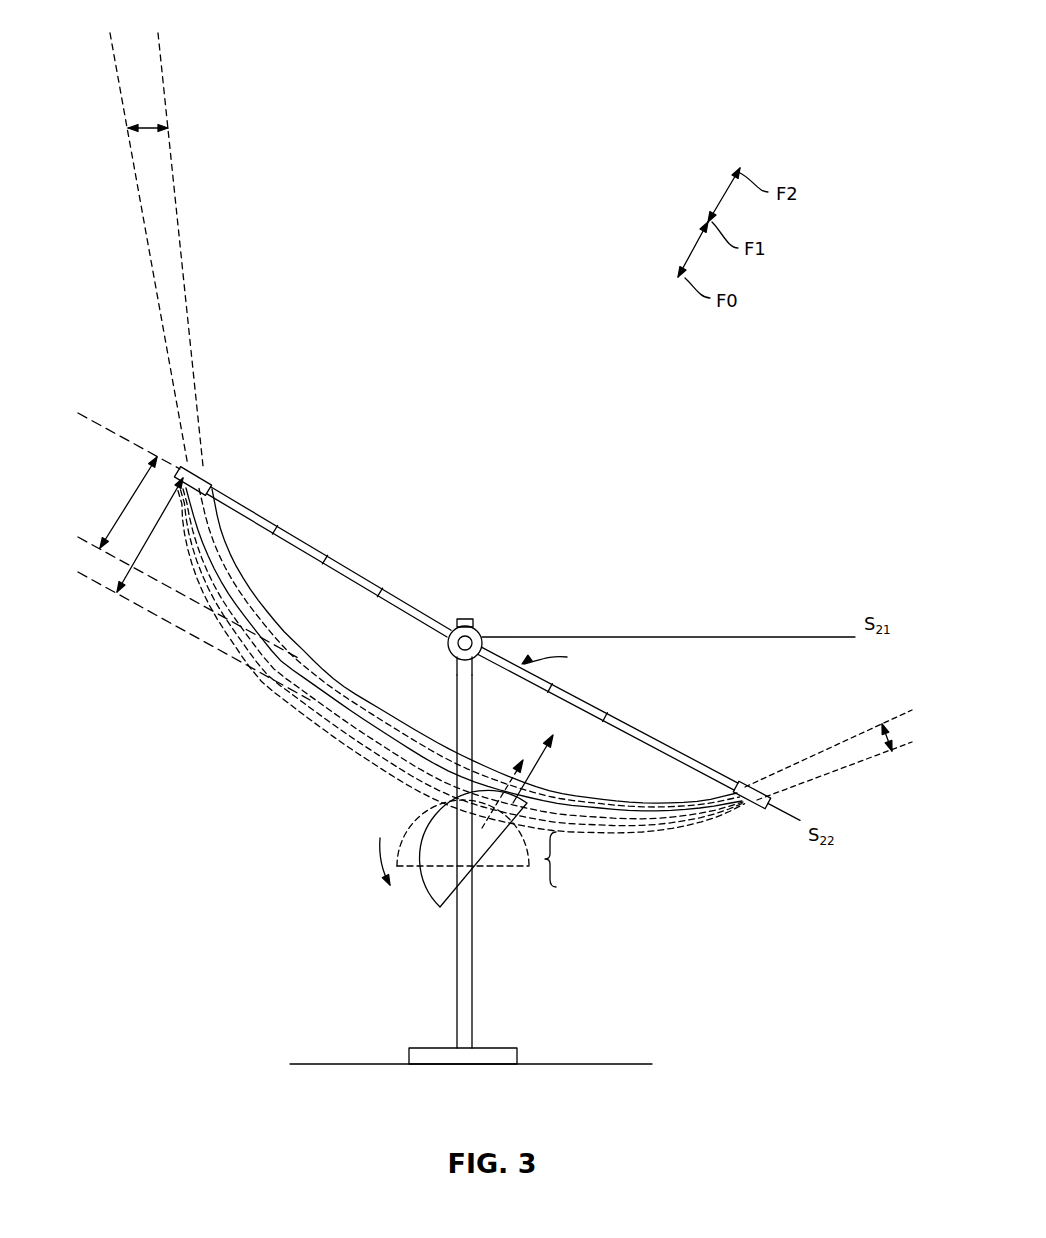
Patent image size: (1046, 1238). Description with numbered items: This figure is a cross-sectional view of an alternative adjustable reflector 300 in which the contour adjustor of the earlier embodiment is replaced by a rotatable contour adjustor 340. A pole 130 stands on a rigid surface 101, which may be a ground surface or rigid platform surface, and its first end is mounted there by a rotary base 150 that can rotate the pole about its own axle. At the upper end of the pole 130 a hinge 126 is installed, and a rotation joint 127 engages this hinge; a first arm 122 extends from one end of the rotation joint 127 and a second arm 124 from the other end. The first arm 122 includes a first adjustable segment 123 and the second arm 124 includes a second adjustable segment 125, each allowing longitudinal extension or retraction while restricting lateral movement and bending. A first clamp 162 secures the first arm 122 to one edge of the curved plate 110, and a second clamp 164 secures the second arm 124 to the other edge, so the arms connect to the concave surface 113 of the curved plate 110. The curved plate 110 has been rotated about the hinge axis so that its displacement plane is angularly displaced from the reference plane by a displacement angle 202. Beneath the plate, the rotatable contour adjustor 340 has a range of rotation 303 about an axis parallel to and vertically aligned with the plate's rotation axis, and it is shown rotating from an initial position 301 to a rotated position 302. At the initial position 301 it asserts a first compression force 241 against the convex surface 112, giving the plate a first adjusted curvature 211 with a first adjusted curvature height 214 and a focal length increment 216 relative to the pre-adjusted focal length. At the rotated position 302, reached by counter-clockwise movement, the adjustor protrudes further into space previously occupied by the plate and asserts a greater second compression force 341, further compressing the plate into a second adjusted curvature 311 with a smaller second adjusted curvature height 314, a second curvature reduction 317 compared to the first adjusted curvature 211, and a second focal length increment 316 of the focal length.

The rigid surface 101 is at (640, 1064).
The curved plate 110 is at (578, 796).
The convex surface 112 is at (723, 812).
The concave surface 113 is at (268, 607).
The first arm 122 is at (275, 531).
The first adjustable segment 123 is at (357, 565).
The second arm 124 is at (620, 734).
The second adjustable segment 125 is at (608, 713).
The hinge 126 is at (448, 641).
The rotation joint 127 is at (472, 661).
The pole 130 is at (485, 950).
The rotary base 150 is at (517, 1047).
The first clamp 162 is at (182, 468).
The second clamp 164 is at (753, 810).
The displacement angle 202 is at (563, 654).
The first adjusted curvature 211 is at (178, 200).
The first adjusted curvature height 214 is at (167, 522).
The focal length increment 216 is at (688, 253).
The first compression force 241 is at (490, 790).
The alternative adjustable reflector 300 is at (421, 330).
The initial position 301 is at (520, 868).
The rotated position 302 is at (440, 907).
The range of rotation 303 is at (383, 849).
The second adjusted curvature 311 is at (150, 260).
The second adjusted curvature height 314 is at (113, 526).
The second focal length increment 316 is at (718, 200).
The second curvature reduction 317 is at (146, 125).
The rotatable contour adjustor 340 is at (570, 859).
The second compression force 341 is at (541, 758).